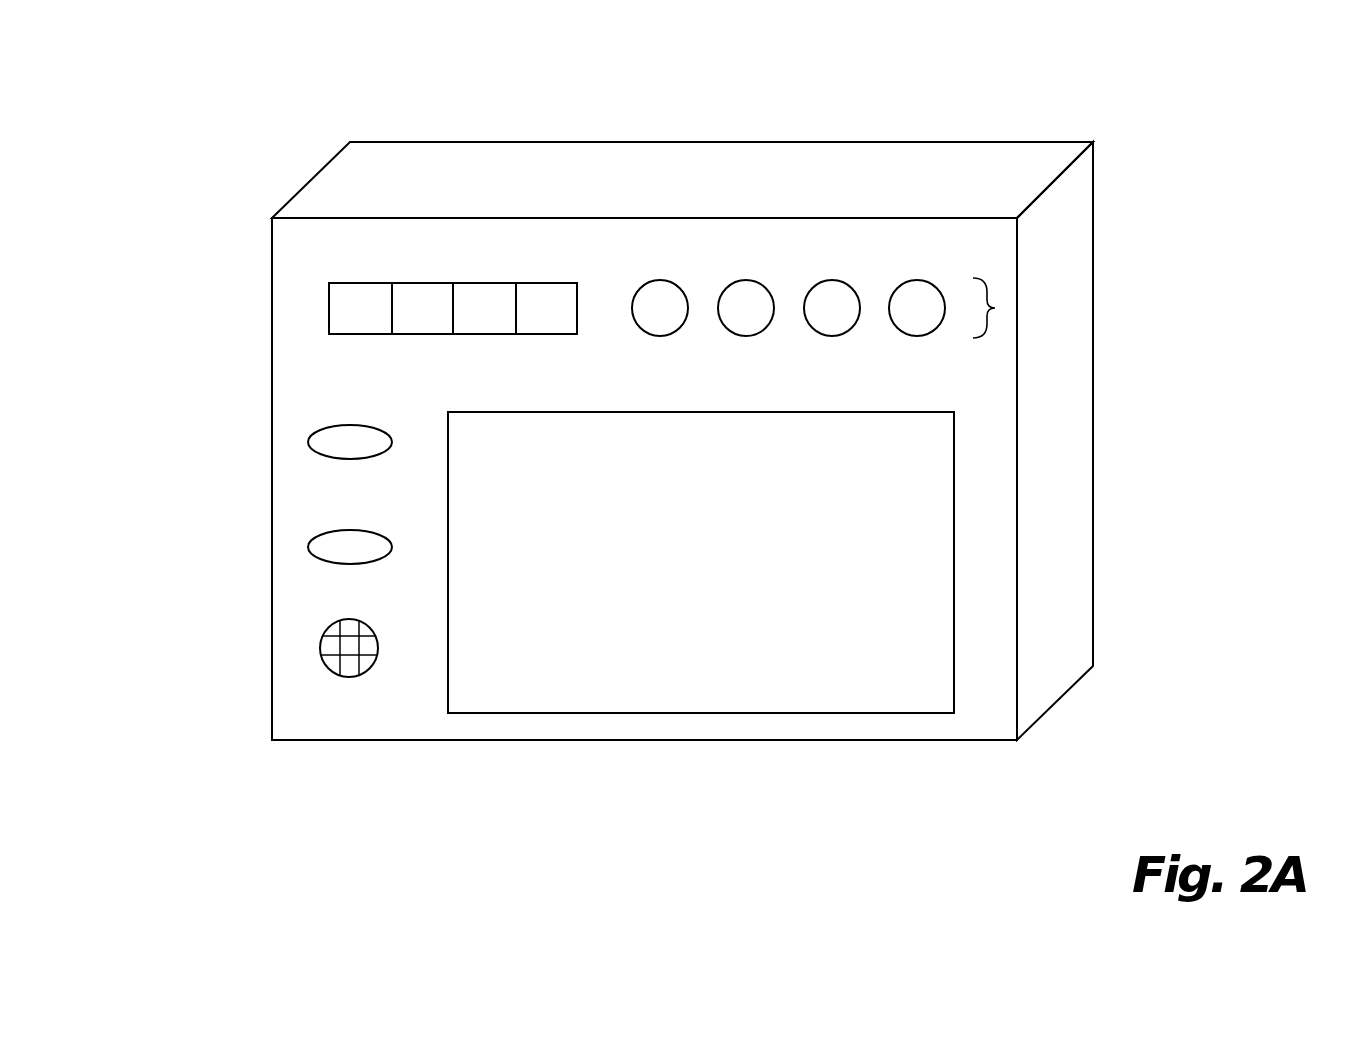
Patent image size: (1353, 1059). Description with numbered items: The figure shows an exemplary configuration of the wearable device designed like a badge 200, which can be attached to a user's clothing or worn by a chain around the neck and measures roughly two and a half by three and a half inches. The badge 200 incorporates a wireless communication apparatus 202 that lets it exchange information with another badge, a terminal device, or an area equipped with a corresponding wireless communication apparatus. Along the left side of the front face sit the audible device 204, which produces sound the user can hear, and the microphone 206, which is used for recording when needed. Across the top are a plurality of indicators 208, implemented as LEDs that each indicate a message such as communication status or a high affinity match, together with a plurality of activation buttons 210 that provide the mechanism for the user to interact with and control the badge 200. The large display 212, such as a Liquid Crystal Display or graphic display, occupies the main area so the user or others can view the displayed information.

The badge 200 is at (1048, 114).
The wireless communication apparatus 202 is at (332, 655).
The audible device 204 is at (315, 547).
The microphone 206 is at (315, 442).
The indicators 208 is at (340, 310).
The activation buttons 210 is at (996, 308).
The display 212 is at (620, 695).